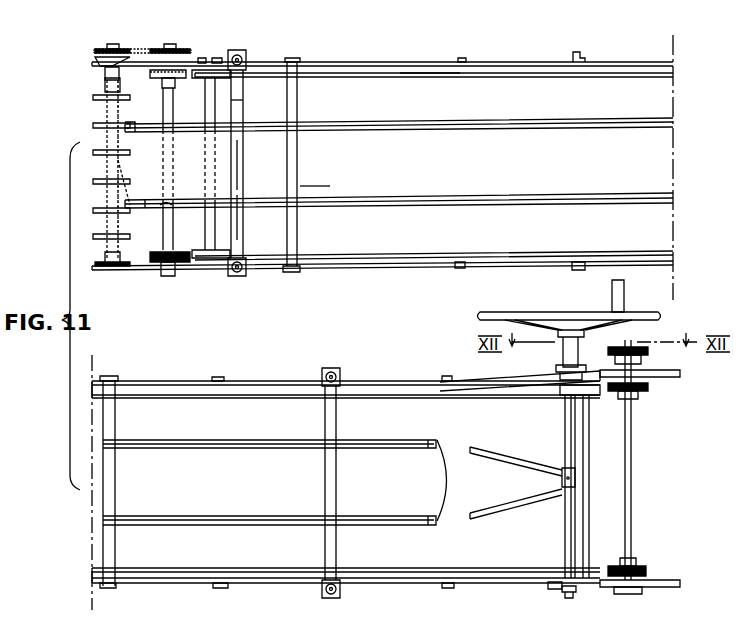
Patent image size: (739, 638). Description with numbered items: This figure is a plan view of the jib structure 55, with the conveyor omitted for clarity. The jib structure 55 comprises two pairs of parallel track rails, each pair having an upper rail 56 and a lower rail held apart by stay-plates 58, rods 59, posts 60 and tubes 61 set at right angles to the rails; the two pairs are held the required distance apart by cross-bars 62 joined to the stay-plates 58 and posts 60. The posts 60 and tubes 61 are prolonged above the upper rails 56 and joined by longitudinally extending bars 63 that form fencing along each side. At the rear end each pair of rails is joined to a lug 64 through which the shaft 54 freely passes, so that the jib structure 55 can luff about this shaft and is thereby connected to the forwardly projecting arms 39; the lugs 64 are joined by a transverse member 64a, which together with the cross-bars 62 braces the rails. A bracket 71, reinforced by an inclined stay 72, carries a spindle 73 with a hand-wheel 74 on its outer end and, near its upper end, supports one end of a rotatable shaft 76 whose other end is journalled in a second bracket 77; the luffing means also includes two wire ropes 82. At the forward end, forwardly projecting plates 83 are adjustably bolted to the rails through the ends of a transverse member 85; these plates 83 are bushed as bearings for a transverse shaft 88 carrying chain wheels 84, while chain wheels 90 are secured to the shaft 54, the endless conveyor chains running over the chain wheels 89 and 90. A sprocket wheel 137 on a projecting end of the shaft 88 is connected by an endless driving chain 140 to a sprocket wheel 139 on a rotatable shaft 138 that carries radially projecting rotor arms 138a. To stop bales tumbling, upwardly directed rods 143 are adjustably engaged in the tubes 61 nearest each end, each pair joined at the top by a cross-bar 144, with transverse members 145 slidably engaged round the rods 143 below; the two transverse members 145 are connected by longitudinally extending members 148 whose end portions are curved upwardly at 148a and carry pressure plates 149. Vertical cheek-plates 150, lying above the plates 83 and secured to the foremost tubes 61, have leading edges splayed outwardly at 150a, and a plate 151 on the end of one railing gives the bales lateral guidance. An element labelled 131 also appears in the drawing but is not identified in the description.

The forwardly projecting arms 39 is at (662, 378).
The shaft 54 is at (633, 460).
The jib structure 55 is at (423, 54).
The upper rail 56 is at (515, 78).
The stay-plates 58 is at (296, 58).
The rods 59 is at (575, 58).
The posts 60 is at (462, 59).
The tubes 61 is at (247, 60).
The cross-bars 62 is at (298, 102).
The longitudinally extending bars 63 is at (400, 78).
The lug 64 is at (592, 378).
The transverse member 64a is at (586, 466).
The bracket 71 is at (558, 373).
The inclined stay 72 is at (495, 386).
The spindle 73 is at (583, 318).
The hand-wheel 74 is at (505, 313).
The rotatable shaft 76 is at (565, 512).
The second bracket 77 is at (566, 593).
The wire ropes 82 is at (478, 512).
The forwardly projecting plates 83 is at (96, 63).
The chain wheels 84 is at (216, 58).
The transverse member 85 is at (236, 105).
The shaft 88 is at (173, 206).
The chain wheels 89 is at (177, 78).
The chain wheels 90 is at (640, 401).
The sprocket 131 is at (618, 348).
The sprocket wheel 137 is at (150, 76).
The rotatable shaft 138 is at (102, 109).
The rotor arms 138a is at (95, 209).
The sprocket wheel 139 is at (97, 53).
The endless driving chain 140 is at (140, 48).
The upwardly directed rods 143 is at (237, 278).
The cross-bar 144 is at (238, 165).
The transverse members 145 is at (243, 214).
The longitudinally extending members 148 is at (240, 55).
The curved end portions 148a is at (148, 200).
The pressure plates 149 is at (272, 183).
The cheek-plates 150 is at (182, 45).
The splayed leading edge portions 150a is at (103, 45).
The plate 151 is at (148, 278).